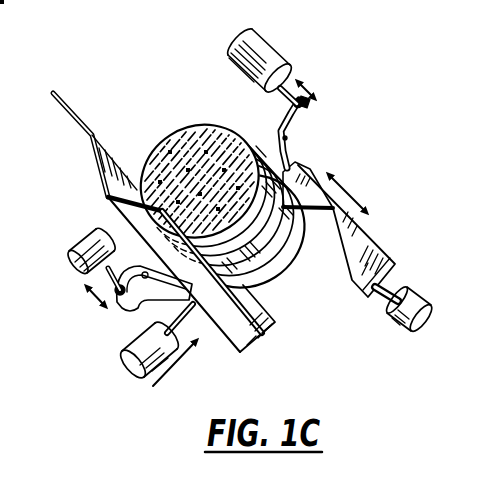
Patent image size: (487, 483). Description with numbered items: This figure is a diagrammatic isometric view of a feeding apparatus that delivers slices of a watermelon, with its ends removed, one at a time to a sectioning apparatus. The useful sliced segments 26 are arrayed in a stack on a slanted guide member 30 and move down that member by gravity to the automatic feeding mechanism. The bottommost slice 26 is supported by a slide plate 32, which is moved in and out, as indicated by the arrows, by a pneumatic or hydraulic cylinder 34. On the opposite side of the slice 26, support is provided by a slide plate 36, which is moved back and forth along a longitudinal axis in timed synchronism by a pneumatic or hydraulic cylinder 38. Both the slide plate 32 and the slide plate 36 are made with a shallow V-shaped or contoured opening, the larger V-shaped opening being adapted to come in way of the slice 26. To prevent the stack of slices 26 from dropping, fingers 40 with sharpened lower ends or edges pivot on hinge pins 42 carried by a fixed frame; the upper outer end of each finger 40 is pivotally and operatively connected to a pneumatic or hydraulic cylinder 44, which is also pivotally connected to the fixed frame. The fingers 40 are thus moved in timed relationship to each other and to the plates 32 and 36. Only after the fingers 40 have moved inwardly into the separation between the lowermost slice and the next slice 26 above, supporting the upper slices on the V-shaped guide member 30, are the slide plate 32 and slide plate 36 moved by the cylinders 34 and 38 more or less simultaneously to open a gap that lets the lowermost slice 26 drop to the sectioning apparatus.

The sliced segment 26 is at (199, 122).
The slanted guide member 30 is at (100, 176).
The slide plate 32 is at (250, 352).
The pneumatic or hydraulic cylinder 34 is at (128, 354).
The slide plate 36 is at (377, 242).
The pneumatic or hydraulic cylinder 38 is at (410, 298).
The finger 40 is at (299, 163).
The hinge pin 42 is at (294, 137).
The pneumatic or hydraulic cylinder 44 is at (288, 68).